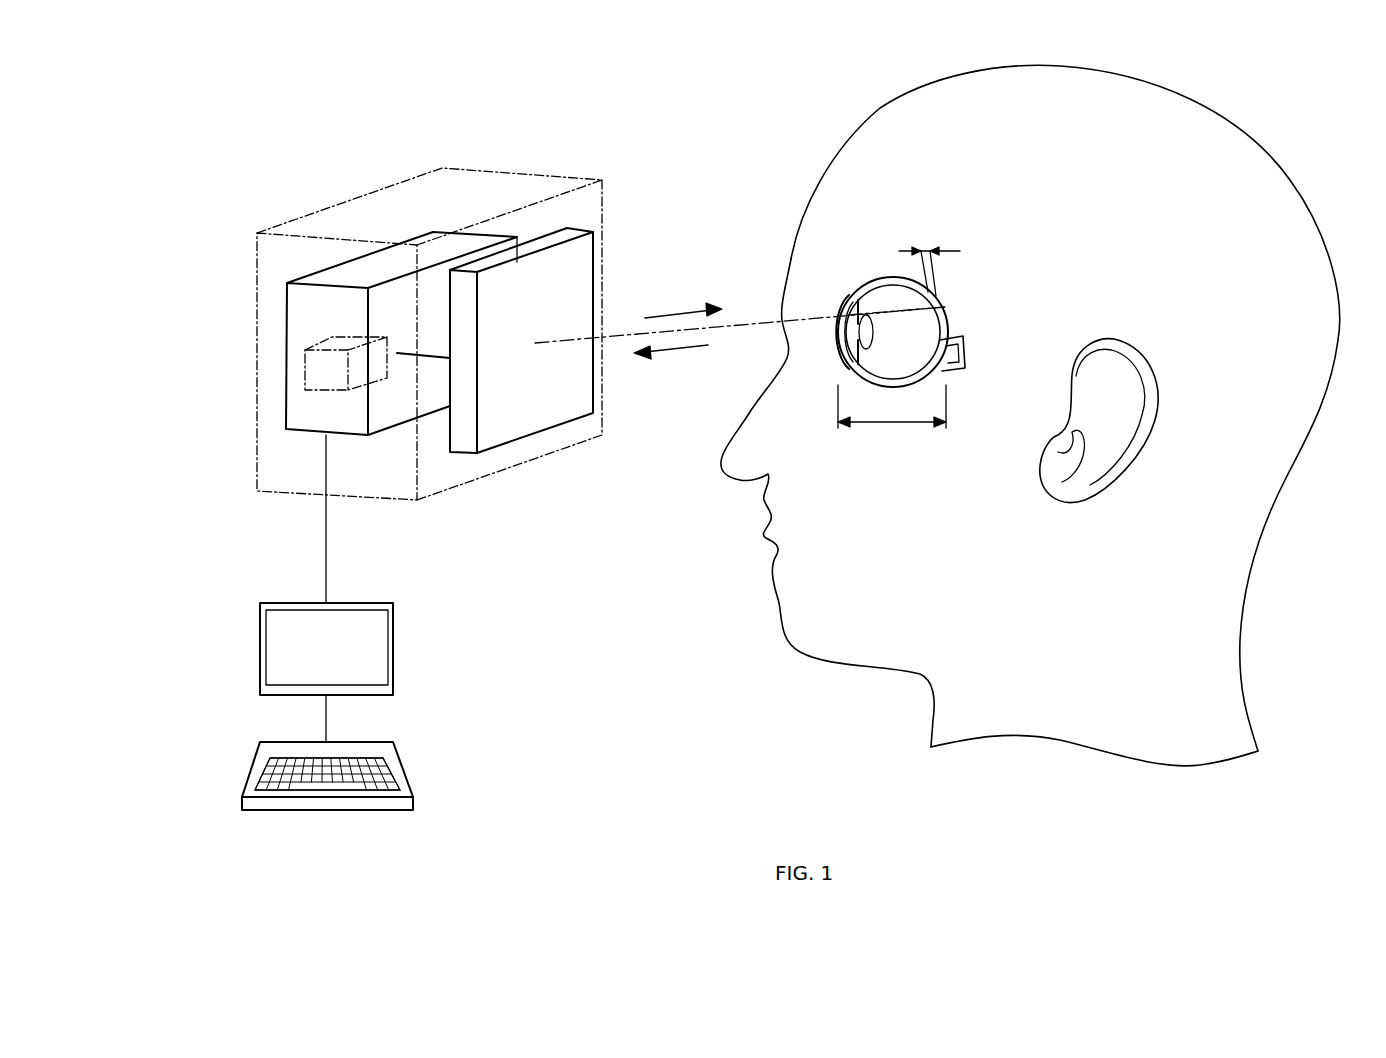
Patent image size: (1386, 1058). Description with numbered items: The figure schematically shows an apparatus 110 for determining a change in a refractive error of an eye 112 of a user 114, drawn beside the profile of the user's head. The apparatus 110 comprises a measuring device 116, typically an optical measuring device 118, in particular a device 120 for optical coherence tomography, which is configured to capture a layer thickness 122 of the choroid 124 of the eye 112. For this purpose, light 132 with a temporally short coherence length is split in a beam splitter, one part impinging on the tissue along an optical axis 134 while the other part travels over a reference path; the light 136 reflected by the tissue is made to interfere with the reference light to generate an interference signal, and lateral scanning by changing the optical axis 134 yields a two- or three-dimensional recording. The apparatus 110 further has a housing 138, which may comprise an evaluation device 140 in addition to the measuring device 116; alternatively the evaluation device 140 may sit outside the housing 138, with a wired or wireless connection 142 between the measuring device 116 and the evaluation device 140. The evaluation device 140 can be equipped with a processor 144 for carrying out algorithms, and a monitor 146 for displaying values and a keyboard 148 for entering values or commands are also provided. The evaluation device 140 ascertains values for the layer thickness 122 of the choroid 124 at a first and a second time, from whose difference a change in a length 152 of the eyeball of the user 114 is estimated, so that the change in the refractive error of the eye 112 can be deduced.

The apparatus 110 is at (250, 184).
The eye 112 is at (970, 280).
The user 114 is at (1210, 252).
The measuring device 116 is at (551, 377).
The optical measuring device 118 is at (551, 377).
The device for optical coherence tomography 120 is at (510, 418).
The layer thickness 122 is at (926, 250).
The choroid 124 is at (950, 311).
The light 132 is at (670, 300).
The optical axis 134 is at (728, 332).
The reflected light 136 is at (680, 352).
The housing 138 is at (372, 205).
The evaluation device 140 is at (305, 306).
The connection 142 is at (425, 360).
The processor 144 is at (305, 378).
The monitor 146 is at (397, 647).
The keyboard 148 is at (412, 770).
The length of the eyeball 152 is at (893, 428).